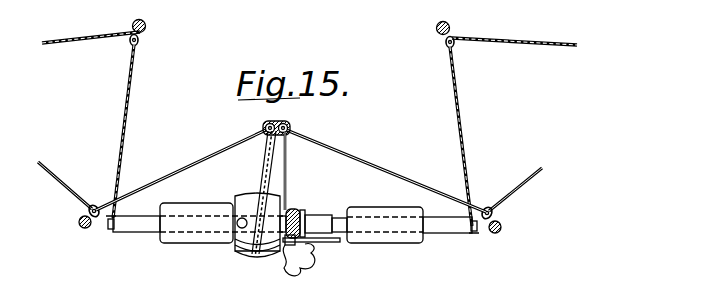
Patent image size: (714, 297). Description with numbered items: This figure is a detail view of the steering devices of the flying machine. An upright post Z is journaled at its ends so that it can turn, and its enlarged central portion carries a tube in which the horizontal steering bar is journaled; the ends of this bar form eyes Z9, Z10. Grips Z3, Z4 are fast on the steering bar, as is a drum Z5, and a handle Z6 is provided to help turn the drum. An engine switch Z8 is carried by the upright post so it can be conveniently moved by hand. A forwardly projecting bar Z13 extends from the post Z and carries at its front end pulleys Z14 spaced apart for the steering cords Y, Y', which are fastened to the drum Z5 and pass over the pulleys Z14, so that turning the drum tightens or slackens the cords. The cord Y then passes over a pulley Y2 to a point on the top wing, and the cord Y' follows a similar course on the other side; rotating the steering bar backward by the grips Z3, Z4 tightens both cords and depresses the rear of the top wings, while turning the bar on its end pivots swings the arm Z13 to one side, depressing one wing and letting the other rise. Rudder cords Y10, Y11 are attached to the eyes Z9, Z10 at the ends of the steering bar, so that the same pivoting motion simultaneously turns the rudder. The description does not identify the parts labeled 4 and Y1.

The rudder cord Y10 is at (94, 52).
The rudder cord Y11 is at (515, 42).
The pivot eye 4 is at (129, 47).
The steering cord Y is at (108, 127).
The pulley Y2 is at (490, 200).
The steering cord Y' is at (182, 169).
The right diagonal tie rod Y1 is at (385, 170).
The pulleys Z14 is at (292, 122).
The forwardly projecting bar Z13 is at (292, 160).
The upright post Z is at (298, 208).
The handle Z6 is at (244, 217).
The drum Z5 is at (247, 250).
The grip Z4 is at (220, 233).
The grip Z3 is at (405, 230).
The steering bar end eye Z9 is at (110, 229).
The steering bar end eye Z10 is at (475, 232).
The engine switch Z8 is at (323, 245).